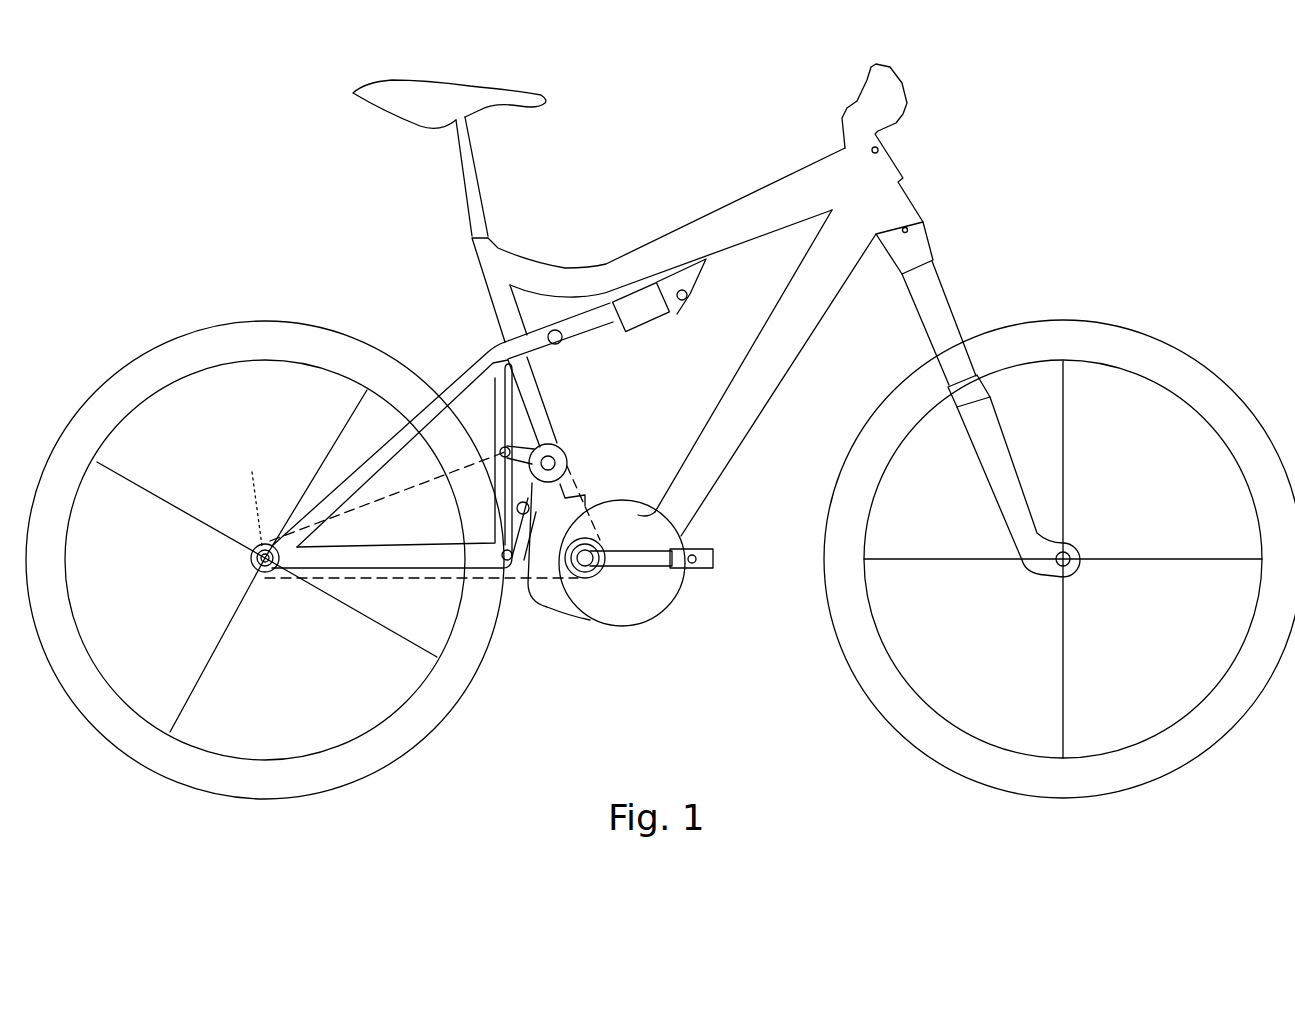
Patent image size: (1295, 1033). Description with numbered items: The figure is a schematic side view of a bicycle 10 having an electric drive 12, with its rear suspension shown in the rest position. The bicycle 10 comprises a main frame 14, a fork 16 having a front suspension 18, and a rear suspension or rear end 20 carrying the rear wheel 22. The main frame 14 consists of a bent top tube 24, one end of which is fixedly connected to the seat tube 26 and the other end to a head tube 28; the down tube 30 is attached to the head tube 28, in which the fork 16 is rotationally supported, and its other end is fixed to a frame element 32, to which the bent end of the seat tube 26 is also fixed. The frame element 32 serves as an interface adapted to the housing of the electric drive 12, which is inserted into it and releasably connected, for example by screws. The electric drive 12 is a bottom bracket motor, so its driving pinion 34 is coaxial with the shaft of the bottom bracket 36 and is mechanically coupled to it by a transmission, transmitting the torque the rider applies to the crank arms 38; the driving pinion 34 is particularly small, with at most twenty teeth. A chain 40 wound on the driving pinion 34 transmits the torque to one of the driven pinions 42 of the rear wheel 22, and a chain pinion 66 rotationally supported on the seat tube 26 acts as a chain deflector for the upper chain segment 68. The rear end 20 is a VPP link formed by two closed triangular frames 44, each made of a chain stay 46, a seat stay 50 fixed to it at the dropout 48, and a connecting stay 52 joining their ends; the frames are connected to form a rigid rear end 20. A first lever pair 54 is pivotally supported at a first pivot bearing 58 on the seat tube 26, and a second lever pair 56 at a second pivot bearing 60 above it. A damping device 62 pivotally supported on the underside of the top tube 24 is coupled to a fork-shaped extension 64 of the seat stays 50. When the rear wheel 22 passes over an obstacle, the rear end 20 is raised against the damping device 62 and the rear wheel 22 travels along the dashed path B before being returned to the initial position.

The bicycle 10 is at (1113, 226).
The electric drive 12 is at (672, 586).
The main frame 14 is at (752, 182).
The fork 16 is at (920, 245).
The front suspension 18 is at (1170, 357).
The rear suspension (rear end) 20 is at (325, 421).
The rear wheel 22 is at (110, 396).
The top tube 24 is at (525, 268).
The seat tube 26 is at (472, 257).
The head tube 28 is at (895, 195).
The down tube 30 is at (812, 294).
The frame element 32 is at (641, 510).
The driving pinion 34 is at (573, 585).
The bottom bracket 36 is at (604, 590).
The crank arms 38 is at (650, 567).
The chain 40 is at (393, 582).
The driven pinion 42 is at (257, 573).
The triangular frame 44 is at (323, 500).
The chain stay 46 is at (297, 573).
The dropout 48 is at (250, 560).
The seat stay 50 is at (397, 437).
The connecting stay 52 is at (494, 412).
The first lever pair 54 is at (522, 523).
The second lever pair 56 is at (549, 438).
The first pivot bearing 58 is at (512, 477).
The second pivot bearing 60 is at (552, 446).
The damping device 62 is at (637, 298).
The fork-shaped extension 64 is at (538, 332).
The chain pinion 66 is at (567, 462).
The upper chain segment 68 is at (350, 552).
The path B is at (250, 500).